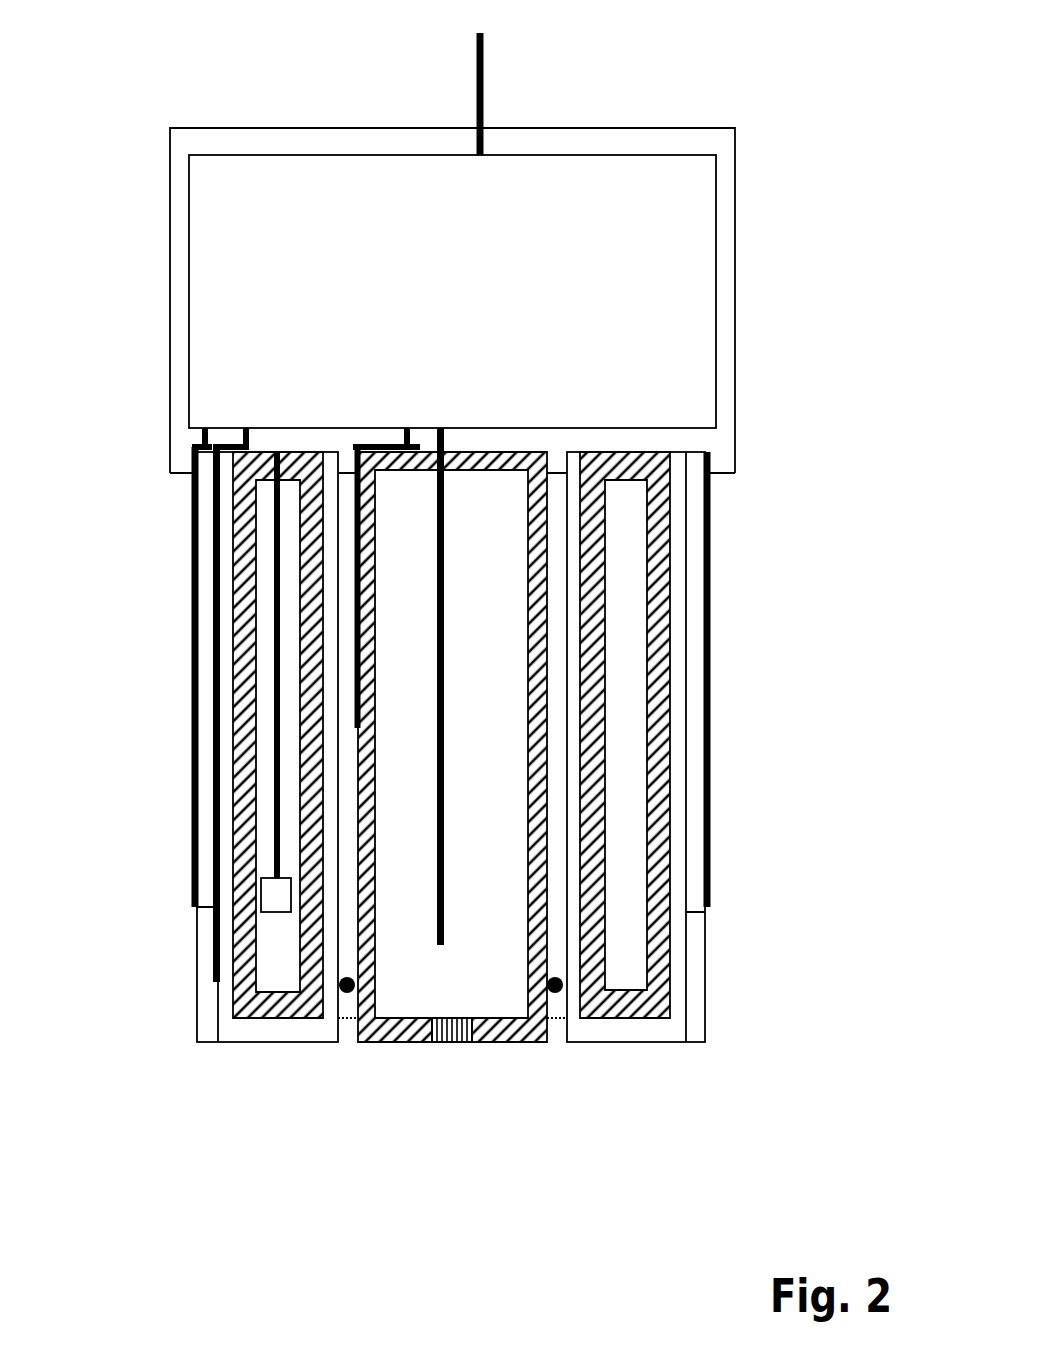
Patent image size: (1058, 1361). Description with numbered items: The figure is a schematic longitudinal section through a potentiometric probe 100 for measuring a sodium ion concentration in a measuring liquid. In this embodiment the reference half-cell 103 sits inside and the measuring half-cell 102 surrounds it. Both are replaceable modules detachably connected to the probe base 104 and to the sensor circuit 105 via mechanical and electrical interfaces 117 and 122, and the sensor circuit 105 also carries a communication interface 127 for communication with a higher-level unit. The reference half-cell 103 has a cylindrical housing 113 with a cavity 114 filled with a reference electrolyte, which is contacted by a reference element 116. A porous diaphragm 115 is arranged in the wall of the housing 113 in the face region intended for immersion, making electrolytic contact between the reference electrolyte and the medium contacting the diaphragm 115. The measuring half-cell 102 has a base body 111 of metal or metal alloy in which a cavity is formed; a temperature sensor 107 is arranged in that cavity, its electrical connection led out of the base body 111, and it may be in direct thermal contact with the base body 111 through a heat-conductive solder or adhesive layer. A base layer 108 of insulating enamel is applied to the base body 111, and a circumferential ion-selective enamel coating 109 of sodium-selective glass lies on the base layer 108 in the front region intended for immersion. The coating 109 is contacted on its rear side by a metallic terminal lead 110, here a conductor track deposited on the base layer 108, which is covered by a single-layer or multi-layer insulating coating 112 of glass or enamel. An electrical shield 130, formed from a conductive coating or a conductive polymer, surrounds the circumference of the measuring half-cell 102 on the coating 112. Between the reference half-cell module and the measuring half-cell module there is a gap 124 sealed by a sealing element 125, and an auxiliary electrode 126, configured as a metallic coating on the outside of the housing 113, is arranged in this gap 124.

The potentiometric probe 100 is at (740, 98).
The measuring half-cell 102 is at (700, 1070).
The reference half-cell 103 is at (405, 1120).
The probe base 104 is at (735, 268).
The sensor circuit 105 is at (346, 200).
The temperature sensor 107 is at (275, 893).
The base layer 108 is at (240, 1042).
The ion-selective enamel coating 109 is at (693, 970).
The terminal lead 110 is at (217, 980).
The base body 111 is at (285, 1022).
The coating 112 is at (693, 753).
The housing 113 is at (520, 1043).
The cavity 114 is at (410, 1000).
The porous diaphragm 115 is at (452, 1030).
The reference element 116 is at (450, 908).
The mechanical and electrical interface 117 is at (160, 449).
The mechanical and electrical interface 122 is at (465, 434).
The gap 124 is at (555, 683).
The sealing element 125 is at (555, 994).
The auxiliary electrode 126 is at (360, 625).
The communication interface 127 is at (483, 55).
The electrical shield 130 is at (192, 753).